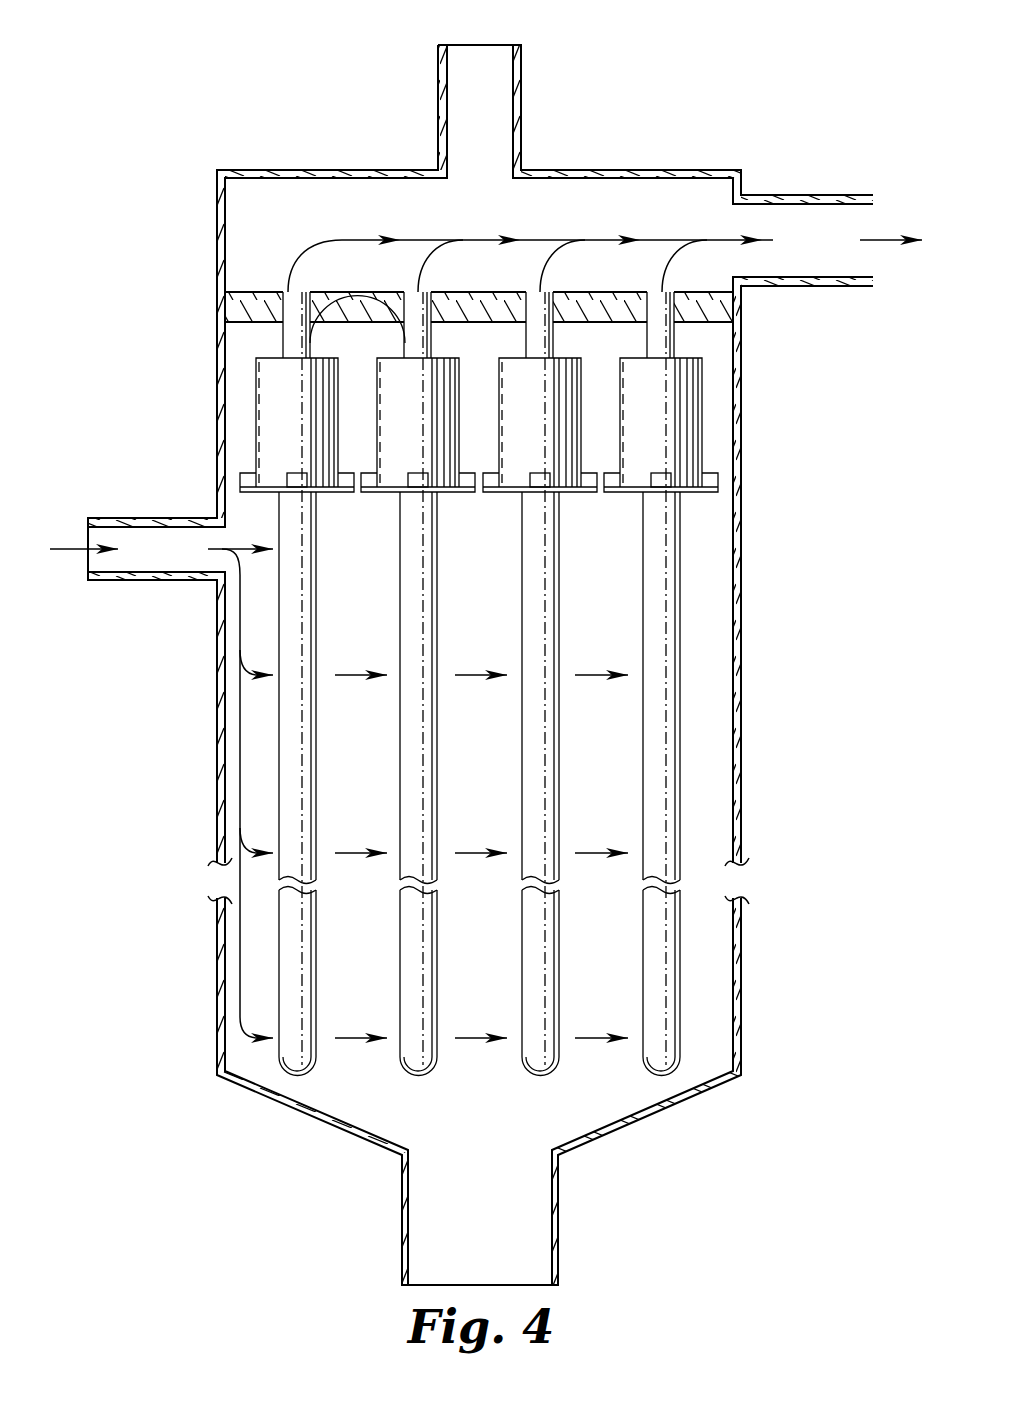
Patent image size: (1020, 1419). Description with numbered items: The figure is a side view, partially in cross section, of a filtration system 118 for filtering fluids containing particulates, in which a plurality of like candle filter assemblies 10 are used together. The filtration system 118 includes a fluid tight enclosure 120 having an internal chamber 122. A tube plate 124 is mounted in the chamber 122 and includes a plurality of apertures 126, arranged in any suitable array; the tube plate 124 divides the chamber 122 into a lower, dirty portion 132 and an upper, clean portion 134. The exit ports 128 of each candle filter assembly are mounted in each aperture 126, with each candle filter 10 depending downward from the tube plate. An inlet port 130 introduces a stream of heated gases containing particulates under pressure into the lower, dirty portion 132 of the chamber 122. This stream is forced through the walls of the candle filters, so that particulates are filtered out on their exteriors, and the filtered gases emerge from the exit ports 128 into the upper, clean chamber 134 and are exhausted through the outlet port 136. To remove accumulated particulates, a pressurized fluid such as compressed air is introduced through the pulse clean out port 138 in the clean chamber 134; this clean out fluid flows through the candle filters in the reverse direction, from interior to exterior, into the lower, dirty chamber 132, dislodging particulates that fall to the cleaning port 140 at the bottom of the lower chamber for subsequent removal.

The candle filter assembly 10 is at (522, 1078).
The filtration system 118 is at (605, 62).
The fluid tight enclosure 120 is at (742, 457).
The internal chamber 122 is at (455, 617).
The tube plate 124 is at (722, 304).
The apertures 126 is at (290, 305).
The exit ports 128 is at (366, 300).
The inlet port 130 is at (158, 538).
The lower dirty portion 132 is at (332, 617).
The upper clean portion 134 is at (549, 220).
The outlet port 136 is at (808, 212).
The pulse clean out port 138 is at (482, 55).
The cleaning port 140 is at (428, 1243).